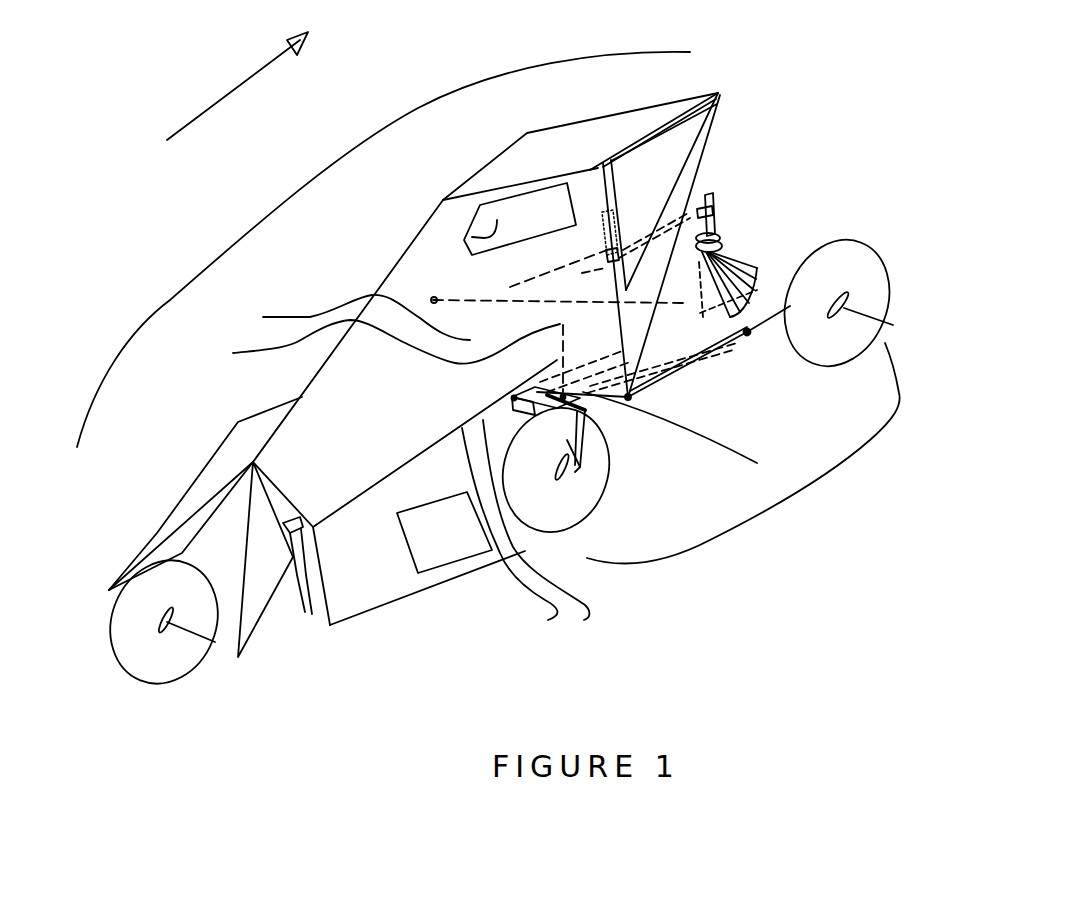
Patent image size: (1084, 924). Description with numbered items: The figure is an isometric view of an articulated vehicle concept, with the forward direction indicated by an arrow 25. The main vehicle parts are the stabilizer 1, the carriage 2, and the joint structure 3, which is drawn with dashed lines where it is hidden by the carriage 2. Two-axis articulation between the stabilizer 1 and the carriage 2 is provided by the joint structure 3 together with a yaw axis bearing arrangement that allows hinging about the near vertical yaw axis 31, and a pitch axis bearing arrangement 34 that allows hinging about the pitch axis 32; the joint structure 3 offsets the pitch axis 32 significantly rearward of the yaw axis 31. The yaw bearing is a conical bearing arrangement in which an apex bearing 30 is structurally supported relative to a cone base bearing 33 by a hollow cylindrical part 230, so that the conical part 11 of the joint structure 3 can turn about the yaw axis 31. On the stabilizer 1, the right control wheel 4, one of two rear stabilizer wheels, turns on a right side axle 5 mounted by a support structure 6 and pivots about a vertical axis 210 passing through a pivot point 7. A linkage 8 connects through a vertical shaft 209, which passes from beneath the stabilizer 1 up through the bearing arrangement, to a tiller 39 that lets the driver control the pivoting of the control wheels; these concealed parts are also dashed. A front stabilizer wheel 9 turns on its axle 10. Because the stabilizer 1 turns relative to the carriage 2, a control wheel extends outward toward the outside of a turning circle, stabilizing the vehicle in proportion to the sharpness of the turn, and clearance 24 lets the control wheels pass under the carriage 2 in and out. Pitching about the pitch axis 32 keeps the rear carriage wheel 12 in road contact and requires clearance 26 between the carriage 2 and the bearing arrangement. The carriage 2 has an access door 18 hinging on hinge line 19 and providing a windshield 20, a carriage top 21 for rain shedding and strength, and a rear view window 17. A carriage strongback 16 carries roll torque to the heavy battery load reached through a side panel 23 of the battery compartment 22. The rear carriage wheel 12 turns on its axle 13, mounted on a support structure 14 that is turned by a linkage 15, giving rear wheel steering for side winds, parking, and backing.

The stabilizer 1 is at (800, 500).
The carriage 2 is at (333, 167).
The joint structure 3 is at (600, 243).
The control wheel 4 is at (603, 500).
The right side axle 5 is at (560, 478).
The support structure 6 is at (650, 422).
The pivot point 7 is at (580, 440).
The linkage 8 is at (779, 322).
The front stabilizer wheel 9 is at (835, 367).
The axle 10 is at (893, 325).
The conical part 11 is at (778, 292).
The rear carriage wheel 12 is at (182, 675).
The axle 13 is at (217, 647).
The support structure 14 is at (254, 620).
The linkage 15 is at (304, 620).
The carriage strongback 16 is at (340, 342).
The rear view window 17 is at (467, 237).
The carriage access door 18 is at (728, 170).
The hinge line 19 is at (713, 177).
The windshield 20 is at (720, 93).
The carriage top 21 is at (630, 132).
The battery compartment 22 is at (420, 598).
The side panel 23 is at (452, 538).
The clearance 24 is at (509, 530).
The arrow 25 is at (255, 75).
The clearance 26 is at (722, 208).
The apex bearing 30 is at (722, 243).
The yaw axis 31 is at (702, 216).
The pitch axis 32 is at (728, 418).
The cone base bearing 33 is at (790, 283).
The pitch axis bearing arrangement 34 is at (433, 297).
The tiller 39 is at (615, 228).
The vertical shaft 209 is at (722, 247).
The vertical axis 210 is at (365, 343).
The hollow cylindrical part 230 is at (710, 246).